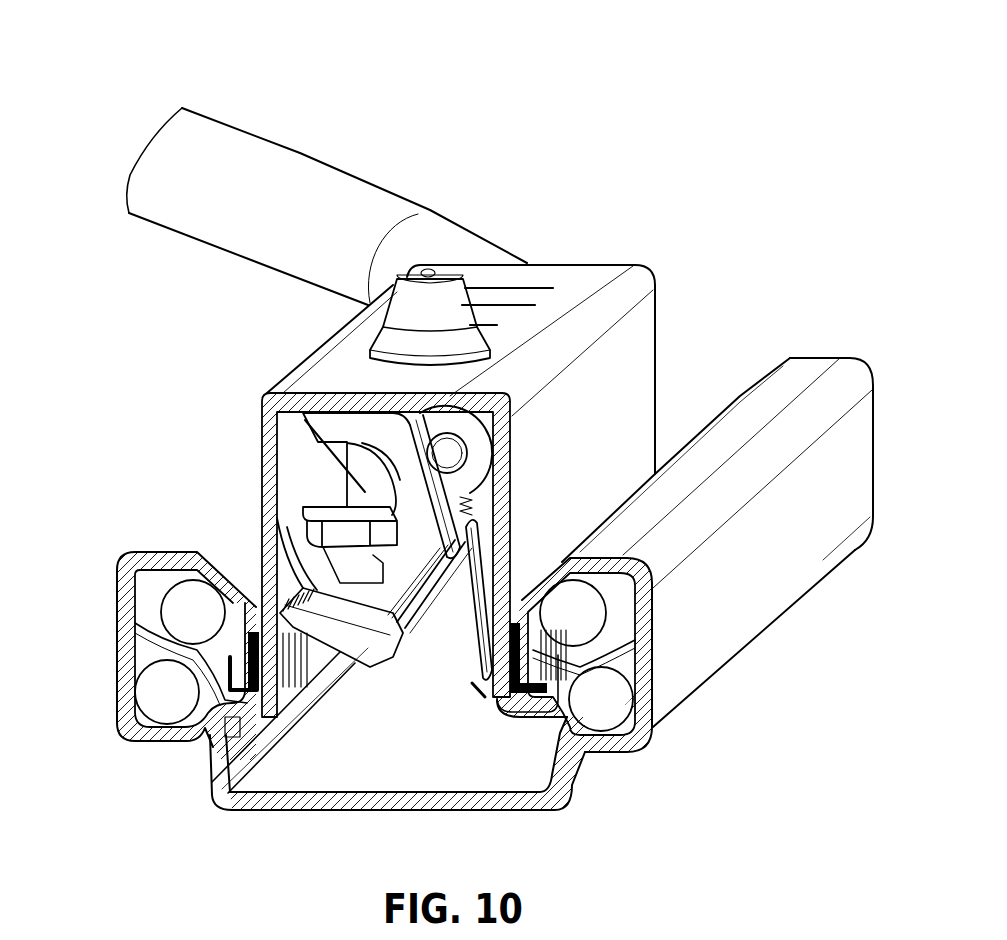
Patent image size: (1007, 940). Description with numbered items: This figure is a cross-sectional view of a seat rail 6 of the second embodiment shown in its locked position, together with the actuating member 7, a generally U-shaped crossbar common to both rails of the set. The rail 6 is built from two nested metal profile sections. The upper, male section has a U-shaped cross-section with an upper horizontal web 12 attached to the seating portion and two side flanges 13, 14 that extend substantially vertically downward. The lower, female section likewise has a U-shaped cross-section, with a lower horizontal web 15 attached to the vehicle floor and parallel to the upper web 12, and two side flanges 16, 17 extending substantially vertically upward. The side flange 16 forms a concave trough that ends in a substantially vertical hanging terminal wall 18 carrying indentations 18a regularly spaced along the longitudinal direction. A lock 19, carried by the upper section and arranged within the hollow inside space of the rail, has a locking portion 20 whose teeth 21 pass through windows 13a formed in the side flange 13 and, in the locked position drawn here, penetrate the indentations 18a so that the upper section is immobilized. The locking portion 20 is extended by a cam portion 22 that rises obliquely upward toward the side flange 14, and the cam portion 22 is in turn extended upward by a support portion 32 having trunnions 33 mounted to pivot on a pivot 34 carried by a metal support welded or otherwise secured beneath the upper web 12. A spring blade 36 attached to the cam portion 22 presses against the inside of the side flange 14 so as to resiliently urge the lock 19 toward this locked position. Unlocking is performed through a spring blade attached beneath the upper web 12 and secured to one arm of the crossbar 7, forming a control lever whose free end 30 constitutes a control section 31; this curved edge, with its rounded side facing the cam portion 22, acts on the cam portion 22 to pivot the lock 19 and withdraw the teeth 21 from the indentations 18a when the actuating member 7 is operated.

The rail 6 is at (650, 170).
The actuating member 7 is at (286, 168).
The upper horizontal web 12 is at (457, 397).
The side flange 13 is at (265, 492).
The windows 13a is at (342, 690).
The side flange 14 is at (515, 465).
The lower horizontal web 15 is at (283, 800).
The side flange 16 is at (121, 690).
The side flange 17 is at (647, 655).
The hanging terminal wall 18 is at (237, 627).
The indentations 18a is at (233, 663).
The lock 19 is at (397, 670).
The locking portion 20 is at (337, 658).
The teeth 21 is at (292, 568).
The cam portion 22 is at (425, 597).
The free end 30 is at (315, 510).
The control section 31 is at (403, 518).
The support portion 32 is at (460, 501).
The trunnions 33 is at (470, 477).
The pivot 34 is at (425, 486).
The spring blade 36 is at (489, 552).